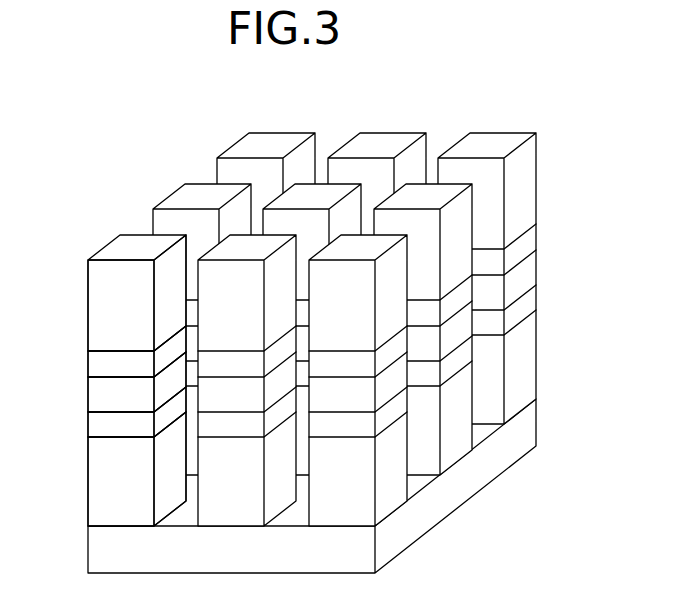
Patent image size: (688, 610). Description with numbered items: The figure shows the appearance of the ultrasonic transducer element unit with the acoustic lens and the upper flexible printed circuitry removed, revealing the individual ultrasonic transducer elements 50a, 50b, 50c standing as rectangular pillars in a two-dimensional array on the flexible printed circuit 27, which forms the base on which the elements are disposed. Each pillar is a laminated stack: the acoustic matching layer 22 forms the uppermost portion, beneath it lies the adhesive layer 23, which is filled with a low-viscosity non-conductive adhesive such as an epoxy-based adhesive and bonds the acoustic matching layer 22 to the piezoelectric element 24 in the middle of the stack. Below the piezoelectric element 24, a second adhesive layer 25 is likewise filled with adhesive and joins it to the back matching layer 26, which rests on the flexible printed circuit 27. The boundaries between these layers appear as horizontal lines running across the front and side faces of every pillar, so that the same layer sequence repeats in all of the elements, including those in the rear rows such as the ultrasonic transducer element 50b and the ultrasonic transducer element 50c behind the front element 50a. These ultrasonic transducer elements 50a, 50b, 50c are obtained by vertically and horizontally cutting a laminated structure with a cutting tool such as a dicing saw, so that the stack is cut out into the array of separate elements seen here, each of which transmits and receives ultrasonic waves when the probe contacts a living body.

The acoustic matching layer 22 is at (96, 309).
The adhesive layer 23 is at (96, 365).
The piezoelectric element 24 is at (96, 402).
The adhesive layer 25 is at (96, 437).
The back matching layer 26 is at (96, 486).
The flexible printed circuit 27 is at (96, 551).
The ultrasonic transducer element 50a is at (122, 245).
The ultrasonic transducer element 50b is at (185, 200).
The ultrasonic transducer element 50c is at (252, 140).